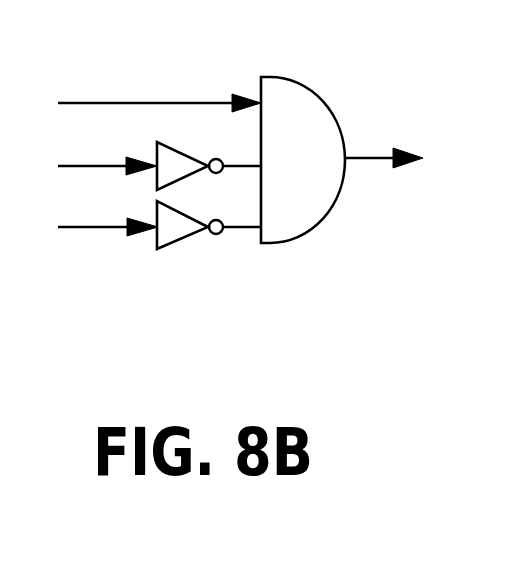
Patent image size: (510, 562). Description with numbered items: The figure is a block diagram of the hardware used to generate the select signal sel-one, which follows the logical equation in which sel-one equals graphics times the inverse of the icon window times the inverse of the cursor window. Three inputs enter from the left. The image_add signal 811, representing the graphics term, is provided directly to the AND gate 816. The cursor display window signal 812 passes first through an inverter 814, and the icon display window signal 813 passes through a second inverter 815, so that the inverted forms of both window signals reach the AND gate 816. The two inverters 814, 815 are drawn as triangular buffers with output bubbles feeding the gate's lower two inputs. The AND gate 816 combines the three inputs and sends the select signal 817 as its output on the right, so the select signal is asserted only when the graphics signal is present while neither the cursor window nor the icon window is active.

The image_add signal 811 is at (159, 88).
The cursor display window signal 812 is at (107, 152).
The icon display window signal 813 is at (108, 212).
The inverter 814 is at (183, 153).
The inverter 815 is at (187, 237).
The AND gate 816 is at (303, 160).
The signal sel(1) 817 is at (384, 143).